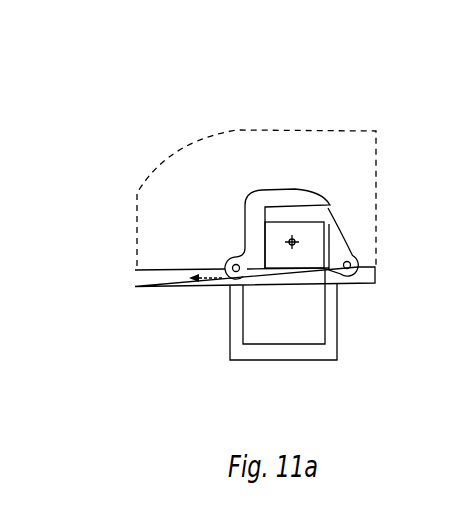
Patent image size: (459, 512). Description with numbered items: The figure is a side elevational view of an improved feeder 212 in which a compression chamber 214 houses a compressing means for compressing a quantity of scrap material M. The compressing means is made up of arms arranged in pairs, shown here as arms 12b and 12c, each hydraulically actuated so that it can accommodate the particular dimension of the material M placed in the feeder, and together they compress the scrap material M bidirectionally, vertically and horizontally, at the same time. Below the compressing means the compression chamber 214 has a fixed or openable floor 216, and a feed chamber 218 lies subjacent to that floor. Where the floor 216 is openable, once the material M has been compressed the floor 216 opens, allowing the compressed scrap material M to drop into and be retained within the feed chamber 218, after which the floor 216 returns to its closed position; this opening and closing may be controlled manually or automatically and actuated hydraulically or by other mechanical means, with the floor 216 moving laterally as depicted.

The feeder 212 is at (133, 165).
The compression chamber 214 is at (292, 160).
The scrap material M is at (310, 233).
The arm 12b is at (256, 230).
The arm 12c is at (345, 230).
The fixed or openable floor 216 is at (265, 290).
The feed chamber 218 is at (307, 330).